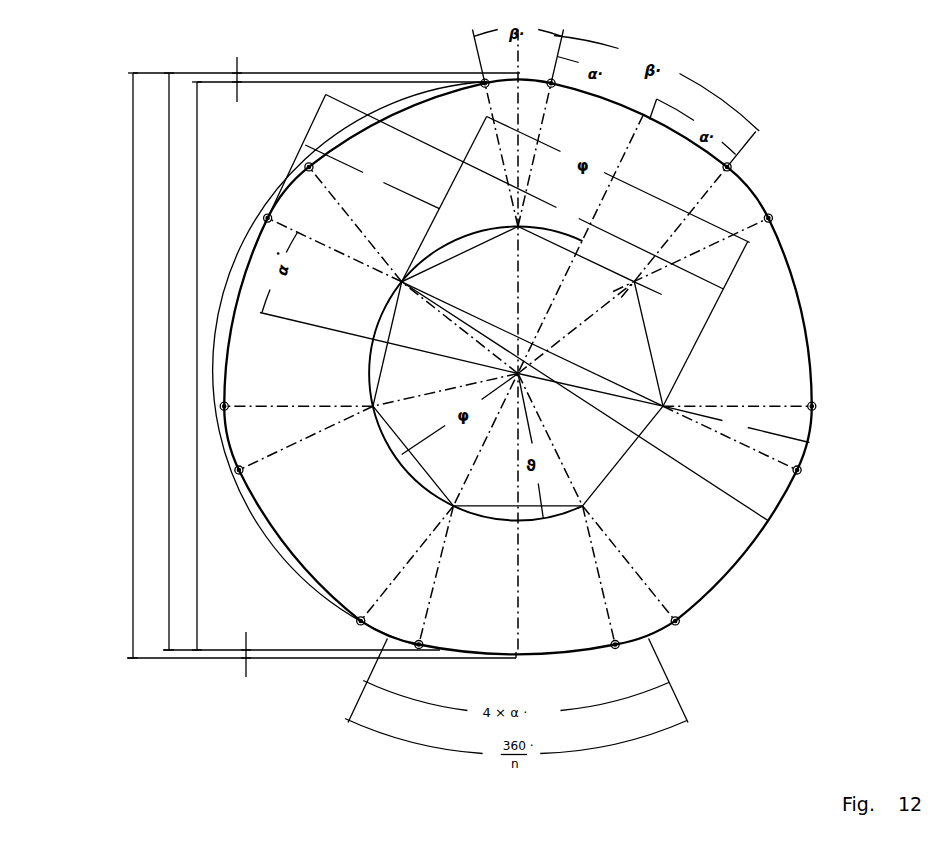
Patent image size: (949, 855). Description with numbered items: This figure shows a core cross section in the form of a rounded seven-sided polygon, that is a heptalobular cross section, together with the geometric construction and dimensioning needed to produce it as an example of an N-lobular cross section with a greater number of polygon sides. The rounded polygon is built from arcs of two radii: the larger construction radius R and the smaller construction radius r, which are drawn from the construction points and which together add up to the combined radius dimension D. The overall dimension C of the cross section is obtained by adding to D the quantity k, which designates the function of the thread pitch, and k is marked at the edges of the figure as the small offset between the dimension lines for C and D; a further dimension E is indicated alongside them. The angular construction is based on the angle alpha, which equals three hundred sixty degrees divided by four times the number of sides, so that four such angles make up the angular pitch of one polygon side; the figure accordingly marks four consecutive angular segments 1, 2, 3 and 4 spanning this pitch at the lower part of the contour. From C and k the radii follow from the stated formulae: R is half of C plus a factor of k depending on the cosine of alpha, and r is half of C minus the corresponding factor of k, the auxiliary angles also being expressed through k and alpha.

The first arc section 1 is at (407, 575).
The second arc section 2 is at (468, 638).
The third arc section 3 is at (566, 638).
The fourth arc section 4 is at (629, 575).
The overall dimension C is at (322, 365).
The combined radius dimension D is at (300, 361).
The width dimension E is at (337, 366).
The thread pitch function k is at (242, 367).
The larger construction radius R is at (547, 308).
The smaller construction radius r is at (557, 294).